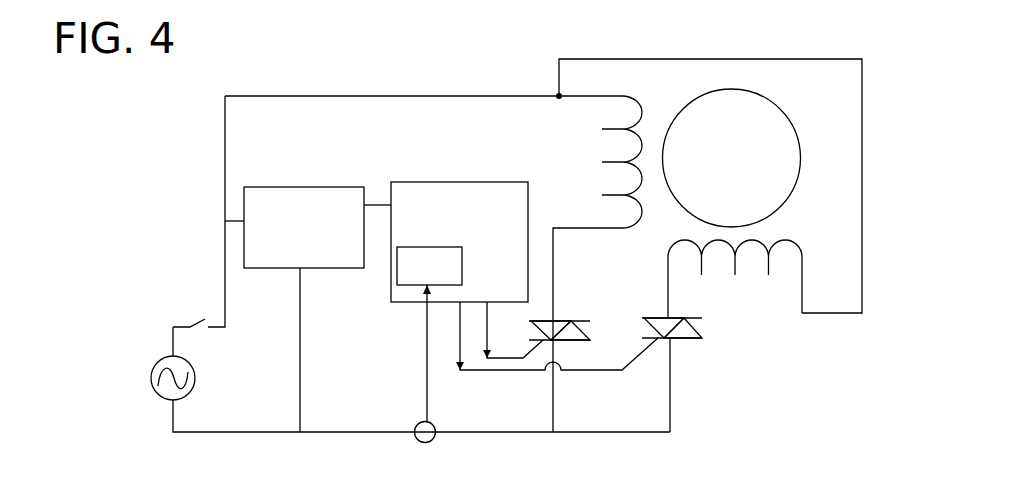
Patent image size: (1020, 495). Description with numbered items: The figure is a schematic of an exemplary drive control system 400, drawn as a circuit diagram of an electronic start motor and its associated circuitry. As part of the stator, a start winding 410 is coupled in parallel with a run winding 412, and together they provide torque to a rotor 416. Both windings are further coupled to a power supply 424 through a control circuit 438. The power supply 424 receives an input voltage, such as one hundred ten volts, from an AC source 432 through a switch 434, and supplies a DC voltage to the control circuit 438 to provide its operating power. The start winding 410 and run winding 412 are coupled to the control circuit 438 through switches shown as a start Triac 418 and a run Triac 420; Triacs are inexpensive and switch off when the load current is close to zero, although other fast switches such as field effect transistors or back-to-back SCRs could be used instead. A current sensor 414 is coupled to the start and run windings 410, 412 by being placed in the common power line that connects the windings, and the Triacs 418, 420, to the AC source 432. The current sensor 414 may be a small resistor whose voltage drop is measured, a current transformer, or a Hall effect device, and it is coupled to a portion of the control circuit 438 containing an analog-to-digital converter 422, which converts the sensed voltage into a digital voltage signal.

The drive control system 400 is at (182, 189).
The start winding 410 is at (788, 240).
The run winding 412 is at (602, 162).
The current sensor 414 is at (433, 441).
The rotor 416 is at (785, 116).
The start Triac 418 is at (684, 340).
The run Triac 420 is at (567, 321).
The analog-to-digital converter 422 is at (397, 283).
The power supply 424 is at (310, 186).
The AC source 432 is at (151, 378).
The switch 434 is at (203, 320).
The control circuit 438 is at (457, 182).